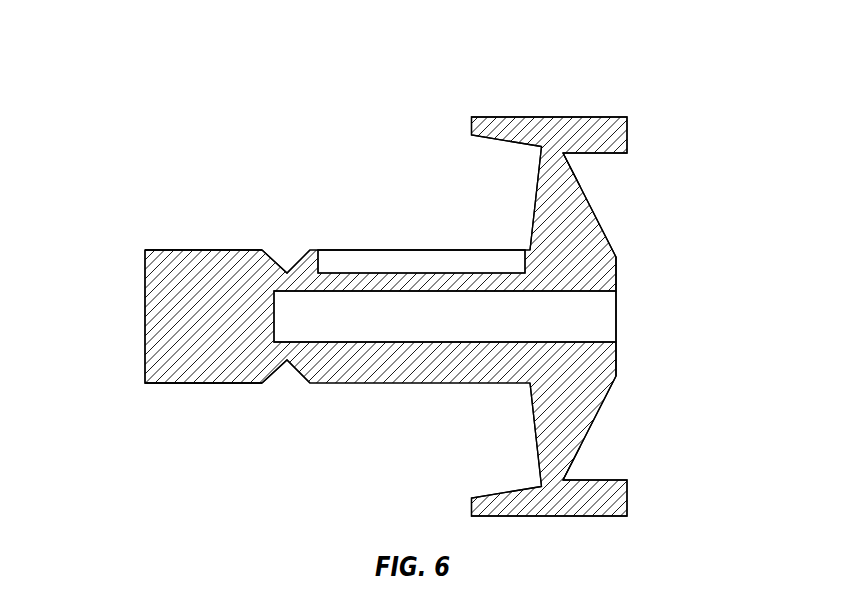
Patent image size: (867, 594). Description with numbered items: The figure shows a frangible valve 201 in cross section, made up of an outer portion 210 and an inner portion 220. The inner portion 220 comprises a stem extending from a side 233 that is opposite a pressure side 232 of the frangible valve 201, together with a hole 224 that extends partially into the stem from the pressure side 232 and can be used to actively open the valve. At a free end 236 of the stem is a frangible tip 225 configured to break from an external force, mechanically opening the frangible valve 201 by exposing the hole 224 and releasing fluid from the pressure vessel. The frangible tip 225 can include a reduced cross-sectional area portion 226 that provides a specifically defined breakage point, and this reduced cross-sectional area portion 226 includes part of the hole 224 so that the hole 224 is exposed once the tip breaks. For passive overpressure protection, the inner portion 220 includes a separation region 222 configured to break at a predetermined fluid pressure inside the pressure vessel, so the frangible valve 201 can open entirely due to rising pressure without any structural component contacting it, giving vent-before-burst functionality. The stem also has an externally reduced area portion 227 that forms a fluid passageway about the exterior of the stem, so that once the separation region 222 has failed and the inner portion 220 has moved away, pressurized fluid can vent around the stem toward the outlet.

The frangible valve 201 is at (281, 48).
The side 233 is at (98, 210).
The free end 236 is at (196, 442).
The frangible tip 225 is at (208, 221).
The reduced cross-sectional area portion 226 is at (289, 228).
The externally reduced area portion 227 is at (412, 253).
The hole 224 is at (636, 315).
The inner portion 220 is at (682, 344).
The outer portion 210 is at (649, 131).
The separation region 222 is at (582, 162).
The pressure side 232 is at (747, 270).